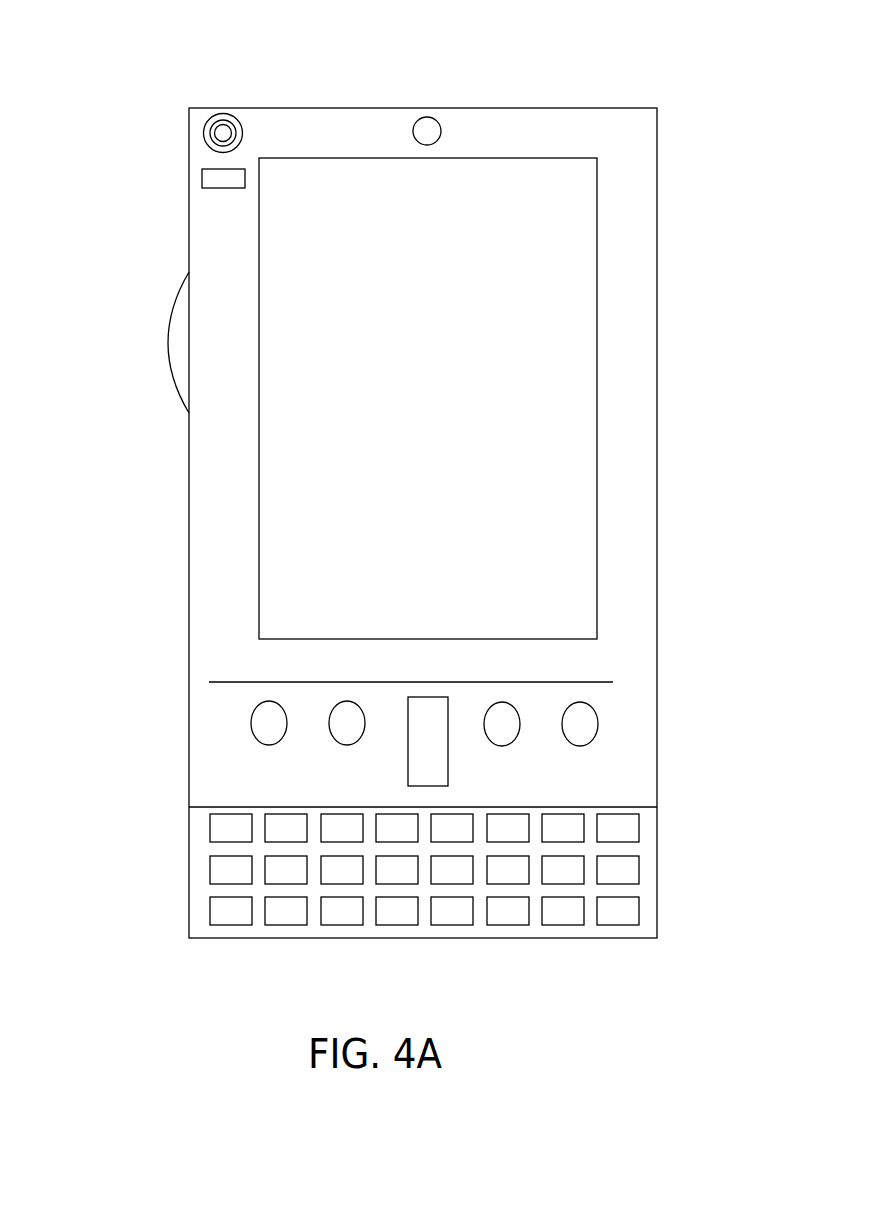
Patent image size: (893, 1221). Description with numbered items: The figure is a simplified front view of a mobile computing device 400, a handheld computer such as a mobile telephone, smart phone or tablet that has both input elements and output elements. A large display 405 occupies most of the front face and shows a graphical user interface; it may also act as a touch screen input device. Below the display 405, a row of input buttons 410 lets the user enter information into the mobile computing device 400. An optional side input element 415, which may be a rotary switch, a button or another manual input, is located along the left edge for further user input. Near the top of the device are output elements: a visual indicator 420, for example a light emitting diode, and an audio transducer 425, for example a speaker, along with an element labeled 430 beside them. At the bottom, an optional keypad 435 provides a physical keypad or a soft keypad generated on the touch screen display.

The mobile computing device 400 is at (645, 123).
The display 405 is at (363, 557).
The input buttons 410 is at (427, 747).
The side input element 415 is at (180, 342).
The visual indicator 420 is at (203, 185).
The audio transducer 425 is at (204, 135).
The sensor 430 is at (438, 128).
The keypad 435 is at (198, 915).